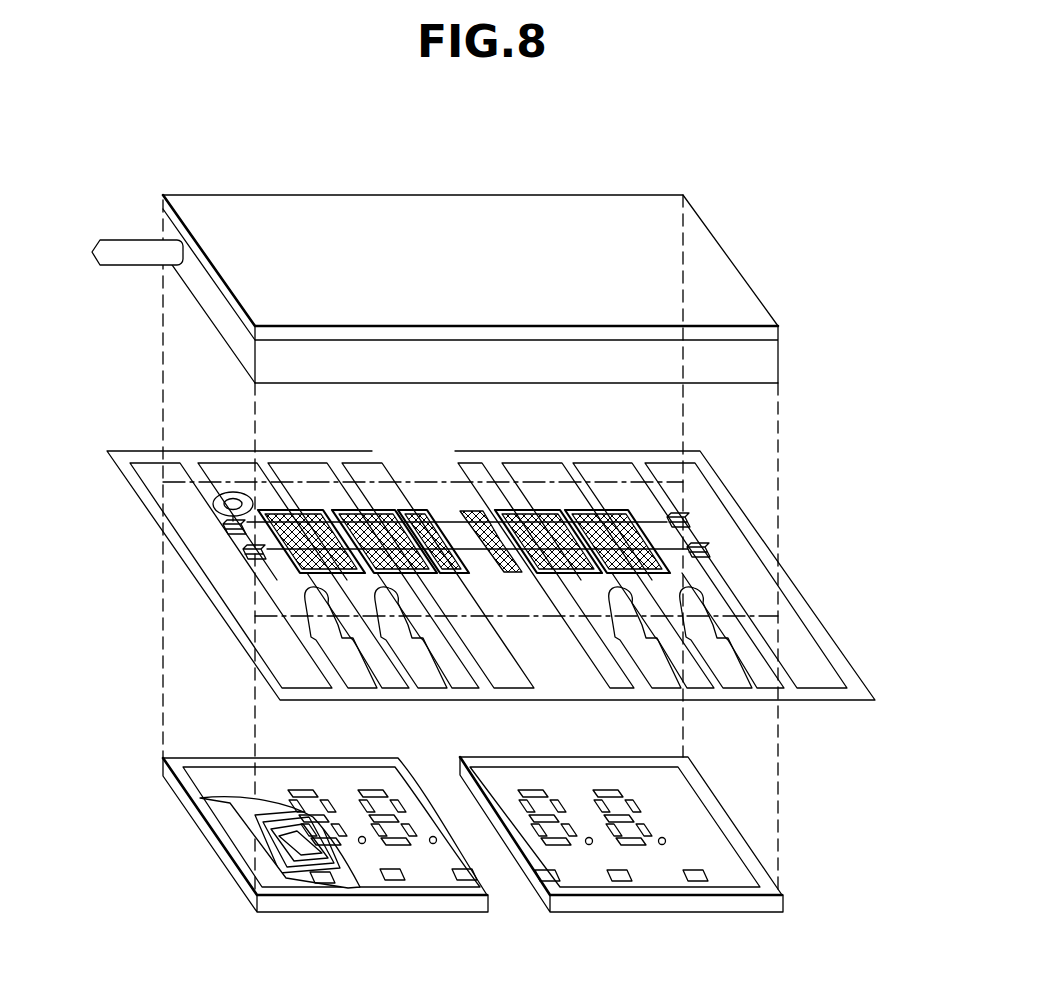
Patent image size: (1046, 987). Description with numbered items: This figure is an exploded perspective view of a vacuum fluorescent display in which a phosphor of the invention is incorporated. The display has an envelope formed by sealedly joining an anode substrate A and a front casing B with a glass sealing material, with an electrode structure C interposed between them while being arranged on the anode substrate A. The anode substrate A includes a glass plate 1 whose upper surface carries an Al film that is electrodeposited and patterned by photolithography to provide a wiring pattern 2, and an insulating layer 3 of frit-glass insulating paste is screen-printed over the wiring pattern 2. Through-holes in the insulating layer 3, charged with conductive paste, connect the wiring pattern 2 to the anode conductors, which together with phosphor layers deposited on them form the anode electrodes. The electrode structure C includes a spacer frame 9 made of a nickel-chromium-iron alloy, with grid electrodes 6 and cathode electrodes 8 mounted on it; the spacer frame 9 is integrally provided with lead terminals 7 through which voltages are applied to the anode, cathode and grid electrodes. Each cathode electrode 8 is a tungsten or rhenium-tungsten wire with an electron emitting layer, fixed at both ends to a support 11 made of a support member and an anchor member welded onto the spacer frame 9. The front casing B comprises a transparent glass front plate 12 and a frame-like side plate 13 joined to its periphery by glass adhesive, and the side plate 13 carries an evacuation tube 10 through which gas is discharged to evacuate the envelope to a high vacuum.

The glass plate 1 is at (621, 842).
The wiring pattern 2 is at (243, 817).
The insulating layer 3 is at (304, 842).
The grid electrodes 6 is at (653, 540).
The lead terminals 7 is at (750, 675).
The cathode electrodes 8 is at (463, 520).
The spacer frame 9 is at (860, 693).
The evacuation tube 10 is at (117, 262).
The support 11 is at (233, 543).
The front plate 12 is at (733, 280).
The side plate 13 is at (765, 357).
The anode substrate A is at (486, 842).
The front casing B is at (486, 289).
The electrode structure C is at (506, 604).